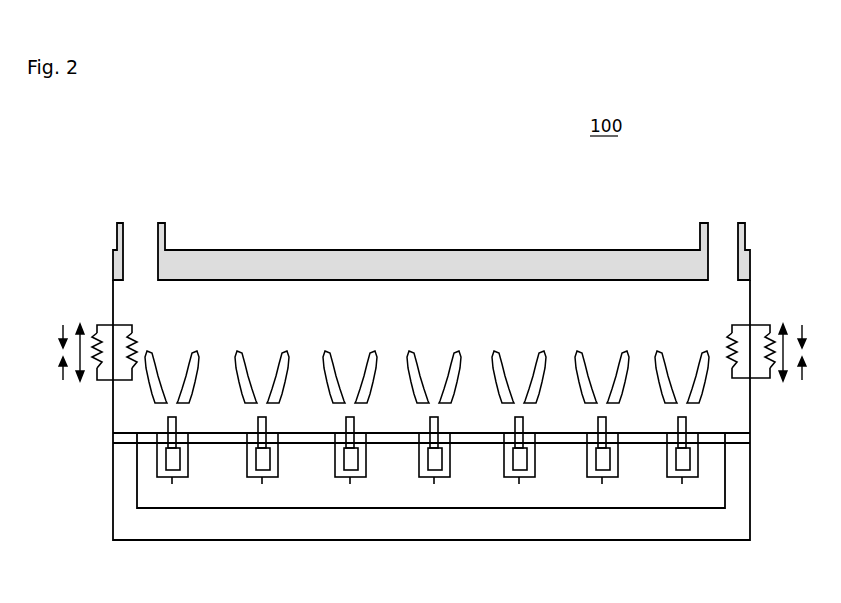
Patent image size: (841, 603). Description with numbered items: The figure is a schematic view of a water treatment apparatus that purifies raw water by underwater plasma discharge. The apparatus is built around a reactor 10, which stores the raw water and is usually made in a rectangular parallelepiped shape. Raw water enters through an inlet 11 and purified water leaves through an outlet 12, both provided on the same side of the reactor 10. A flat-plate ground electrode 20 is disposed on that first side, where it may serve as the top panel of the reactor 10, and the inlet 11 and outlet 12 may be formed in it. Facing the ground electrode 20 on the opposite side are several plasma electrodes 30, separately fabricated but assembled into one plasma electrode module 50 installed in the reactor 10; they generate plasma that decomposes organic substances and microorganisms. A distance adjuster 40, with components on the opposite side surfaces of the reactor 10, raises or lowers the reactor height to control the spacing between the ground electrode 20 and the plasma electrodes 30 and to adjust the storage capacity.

The reactor 10 is at (752, 297).
The inlet 11 is at (163, 229).
The outlet 12 is at (745, 226).
The ground electrode 20 is at (461, 266).
The plasma electrode 30 is at (698, 458).
The distance adjuster 40 is at (105, 325).
The plasma electrode module 50 is at (652, 508).